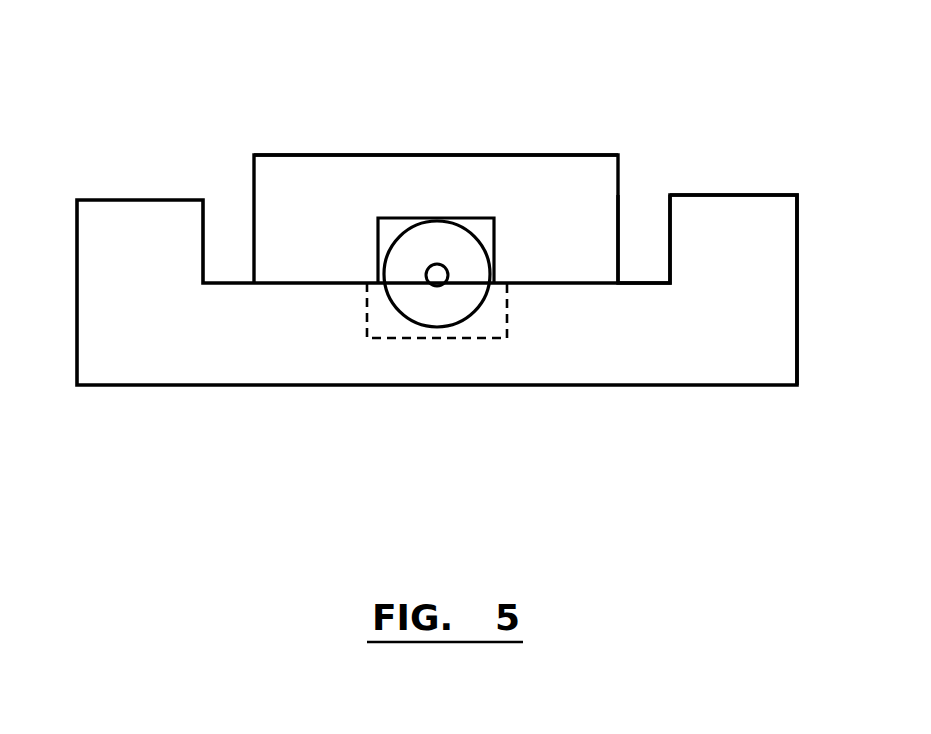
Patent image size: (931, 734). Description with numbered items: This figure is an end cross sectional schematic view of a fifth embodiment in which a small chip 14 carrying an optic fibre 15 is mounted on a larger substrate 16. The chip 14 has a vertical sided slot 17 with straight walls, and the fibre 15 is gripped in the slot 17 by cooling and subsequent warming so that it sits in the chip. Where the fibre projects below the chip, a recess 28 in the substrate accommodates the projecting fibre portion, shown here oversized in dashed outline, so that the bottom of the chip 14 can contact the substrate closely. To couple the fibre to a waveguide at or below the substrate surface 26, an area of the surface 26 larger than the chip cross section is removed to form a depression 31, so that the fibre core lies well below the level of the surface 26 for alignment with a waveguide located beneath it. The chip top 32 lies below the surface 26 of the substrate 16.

The chip 14 is at (290, 223).
The optic fibre 15 is at (435, 242).
The substrate 16 is at (121, 316).
The slot 17 is at (489, 207).
The substrate surface 26 is at (735, 195).
The recess 28 is at (482, 340).
The depression 31 is at (645, 236).
The top surface of plate 32 is at (332, 155).